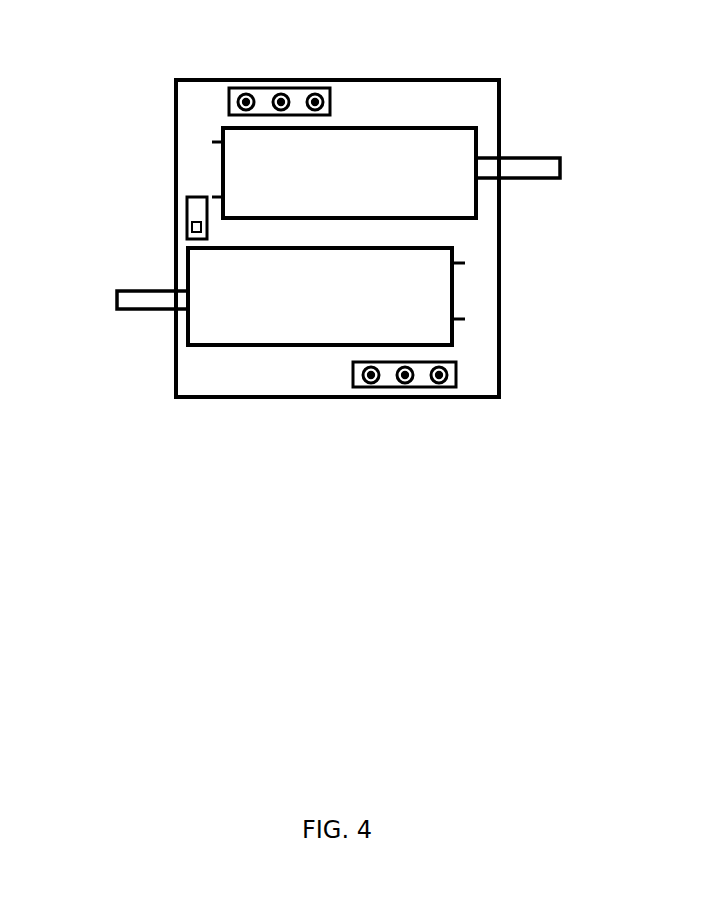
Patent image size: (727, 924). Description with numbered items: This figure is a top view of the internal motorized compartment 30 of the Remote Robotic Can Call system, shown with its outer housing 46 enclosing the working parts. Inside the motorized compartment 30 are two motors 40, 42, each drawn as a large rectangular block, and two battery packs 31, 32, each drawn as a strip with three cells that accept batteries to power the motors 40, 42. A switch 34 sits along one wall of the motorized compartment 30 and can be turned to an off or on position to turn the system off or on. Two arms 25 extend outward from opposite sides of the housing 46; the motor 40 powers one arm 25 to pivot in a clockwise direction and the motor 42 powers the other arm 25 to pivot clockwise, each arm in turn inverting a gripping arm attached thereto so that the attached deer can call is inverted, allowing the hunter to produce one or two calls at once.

The arms 25 is at (563, 168).
The motorized compartment 30 is at (405, 400).
The battery pack 31 is at (282, 74).
The battery pack 32 is at (440, 387).
The switch 34 is at (184, 222).
The motor 40 is at (274, 322).
The motor 42 is at (382, 152).
The housing 46 is at (503, 231).